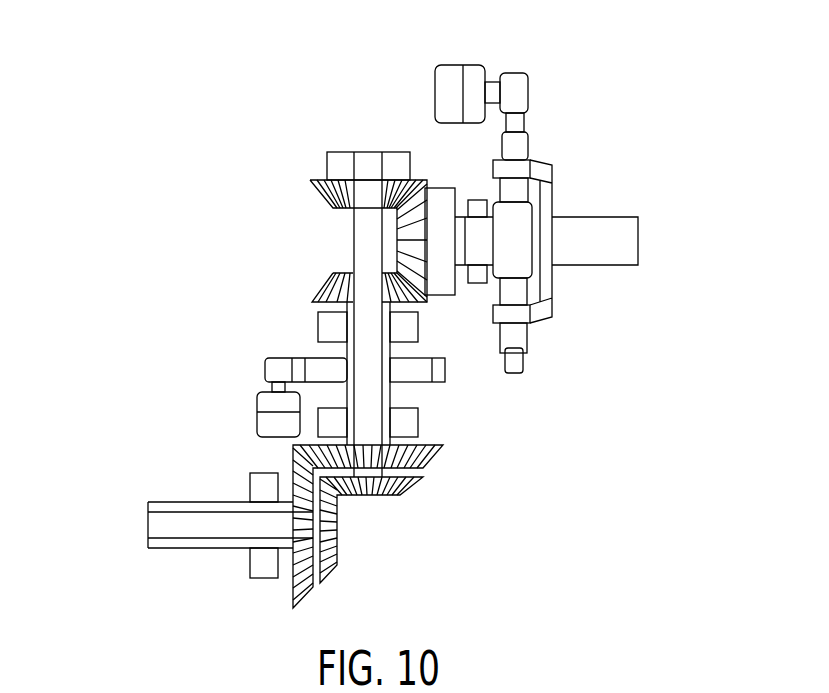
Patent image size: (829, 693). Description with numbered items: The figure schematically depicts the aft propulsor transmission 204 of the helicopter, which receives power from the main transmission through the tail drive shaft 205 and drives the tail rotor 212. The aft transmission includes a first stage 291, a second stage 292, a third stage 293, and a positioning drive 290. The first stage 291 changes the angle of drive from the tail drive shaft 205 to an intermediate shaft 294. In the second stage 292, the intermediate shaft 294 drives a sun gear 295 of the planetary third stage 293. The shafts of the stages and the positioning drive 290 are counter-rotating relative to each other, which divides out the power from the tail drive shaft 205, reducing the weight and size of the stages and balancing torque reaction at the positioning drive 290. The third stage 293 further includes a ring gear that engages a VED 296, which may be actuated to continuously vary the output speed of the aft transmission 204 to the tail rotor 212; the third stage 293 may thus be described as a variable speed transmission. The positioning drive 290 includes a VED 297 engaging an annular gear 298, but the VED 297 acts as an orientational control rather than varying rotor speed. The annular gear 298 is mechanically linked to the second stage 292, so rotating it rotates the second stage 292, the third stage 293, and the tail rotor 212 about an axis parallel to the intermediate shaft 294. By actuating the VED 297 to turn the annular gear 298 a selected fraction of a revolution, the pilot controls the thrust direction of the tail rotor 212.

The aft propulsor transmission 204 is at (118, 126).
The tail drive shaft 205 is at (173, 520).
The tail rotor 212 is at (617, 242).
The positioning drive 290 is at (247, 351).
The first stage 291 is at (388, 535).
The second stage 292 is at (297, 193).
The third stage 293 is at (578, 348).
The intermediate shaft 294 is at (354, 252).
The sun gear 295 is at (523, 218).
The VED 296 is at (447, 76).
The VED 297 is at (262, 427).
The annular gear 298 is at (418, 373).